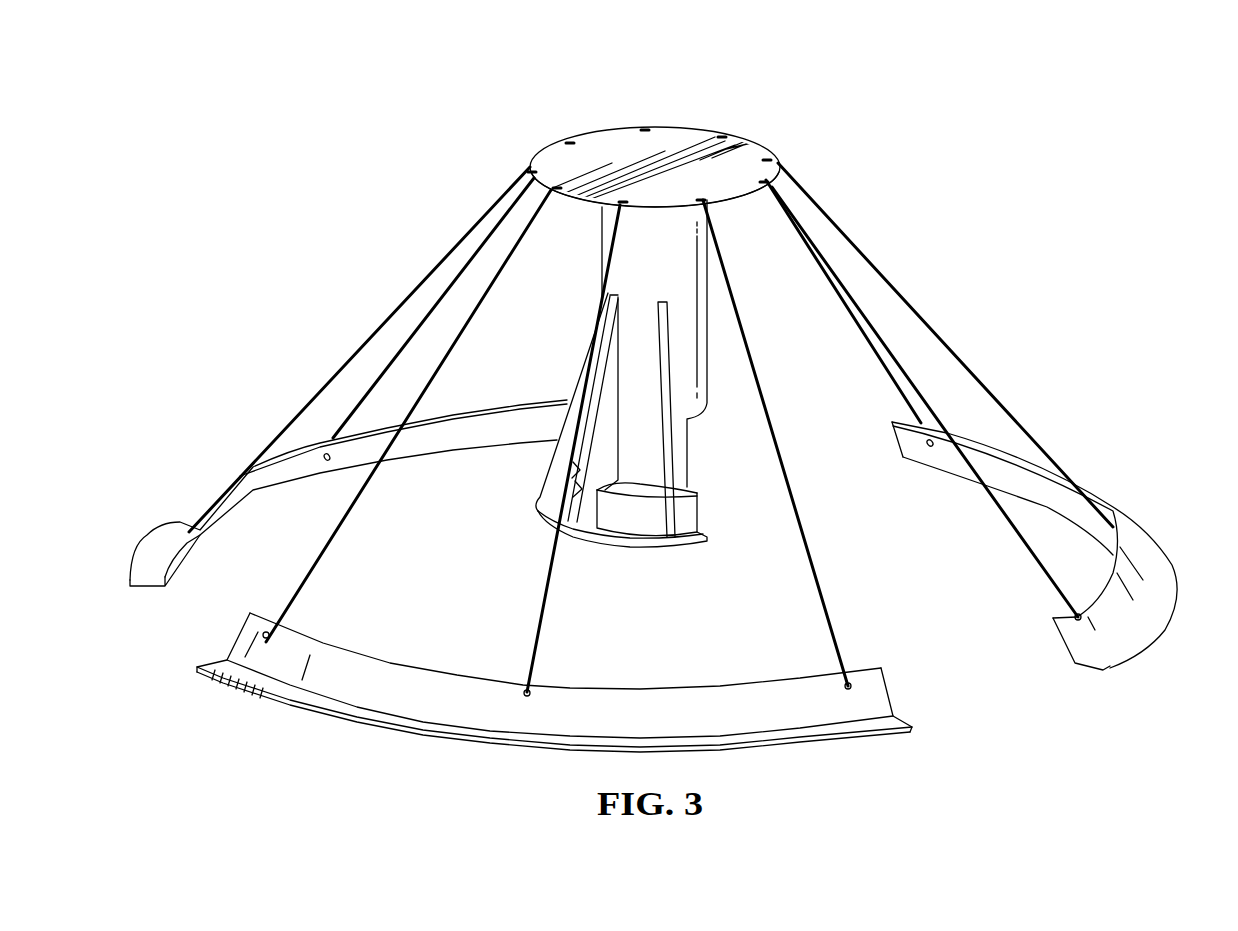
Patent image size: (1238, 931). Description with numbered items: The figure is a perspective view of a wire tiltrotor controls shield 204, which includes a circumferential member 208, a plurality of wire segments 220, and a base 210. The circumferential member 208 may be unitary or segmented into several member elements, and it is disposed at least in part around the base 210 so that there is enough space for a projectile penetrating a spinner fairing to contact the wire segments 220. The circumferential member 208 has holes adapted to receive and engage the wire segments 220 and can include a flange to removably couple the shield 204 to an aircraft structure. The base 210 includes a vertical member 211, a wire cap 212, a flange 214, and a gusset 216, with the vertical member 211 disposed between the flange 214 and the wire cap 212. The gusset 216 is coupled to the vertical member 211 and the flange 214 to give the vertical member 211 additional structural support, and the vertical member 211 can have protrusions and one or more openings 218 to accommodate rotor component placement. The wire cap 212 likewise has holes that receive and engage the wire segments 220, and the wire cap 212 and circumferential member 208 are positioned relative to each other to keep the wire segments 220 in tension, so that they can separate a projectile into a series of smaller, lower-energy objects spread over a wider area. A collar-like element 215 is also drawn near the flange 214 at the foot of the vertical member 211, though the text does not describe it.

The wire tiltrotor controls shield 204 is at (354, 138).
The circumferential member 208 is at (158, 540).
The base 210 is at (683, 127).
The vertical member 211 is at (708, 358).
The wire cap 212 is at (553, 153).
The flange 214 is at (695, 545).
The collar 215 is at (642, 492).
The gusset 216 is at (588, 505).
The opening 218 is at (716, 444).
The wire segments 220 is at (435, 305).